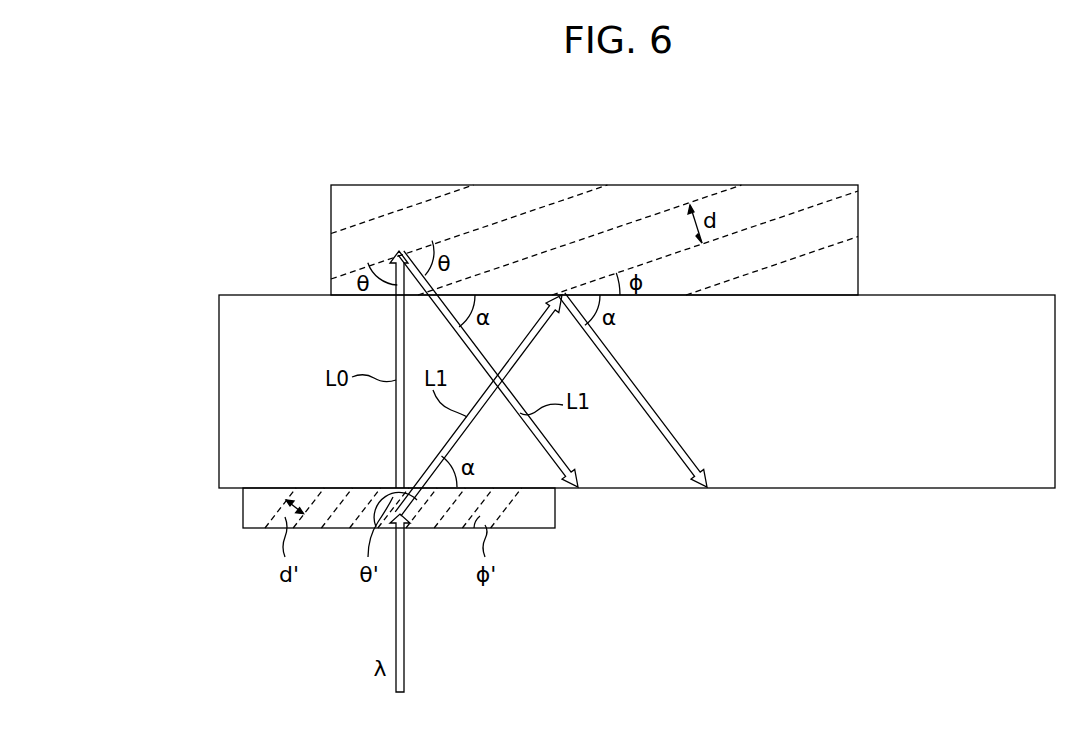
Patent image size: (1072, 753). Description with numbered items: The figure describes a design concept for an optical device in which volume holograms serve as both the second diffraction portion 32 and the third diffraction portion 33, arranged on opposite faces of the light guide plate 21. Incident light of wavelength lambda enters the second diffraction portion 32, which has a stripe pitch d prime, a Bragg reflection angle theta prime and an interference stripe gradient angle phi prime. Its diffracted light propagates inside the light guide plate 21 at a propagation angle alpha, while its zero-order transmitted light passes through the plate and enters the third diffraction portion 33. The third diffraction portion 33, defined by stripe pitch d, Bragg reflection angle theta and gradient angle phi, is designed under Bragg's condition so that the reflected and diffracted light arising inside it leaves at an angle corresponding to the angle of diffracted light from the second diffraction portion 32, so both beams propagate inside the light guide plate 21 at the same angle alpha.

The light guide plate 21 is at (946, 473).
The second diffraction portion 32 is at (543, 508).
The third diffraction portion 33 is at (342, 242).